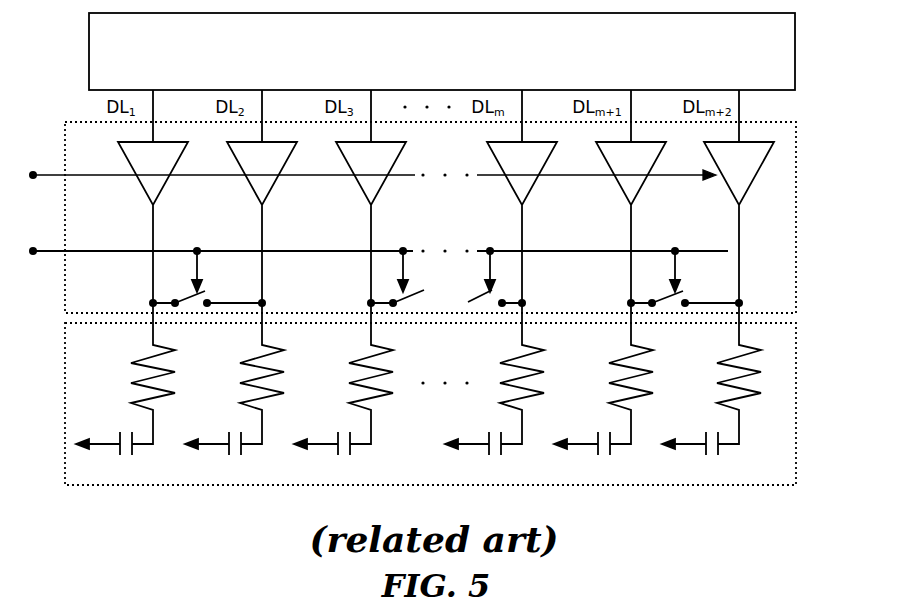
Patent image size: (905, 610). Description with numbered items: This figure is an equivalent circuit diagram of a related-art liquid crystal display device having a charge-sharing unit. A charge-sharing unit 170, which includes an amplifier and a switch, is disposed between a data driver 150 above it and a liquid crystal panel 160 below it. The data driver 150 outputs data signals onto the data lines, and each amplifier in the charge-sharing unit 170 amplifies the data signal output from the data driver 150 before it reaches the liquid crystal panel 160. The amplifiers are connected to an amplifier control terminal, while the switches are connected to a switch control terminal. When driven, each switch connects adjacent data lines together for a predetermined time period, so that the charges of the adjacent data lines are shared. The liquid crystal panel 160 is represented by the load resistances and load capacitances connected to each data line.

The data driver 150 is at (796, 55).
The charge-sharing unit 170 is at (796, 235).
The liquid crystal panel 160 is at (796, 398).